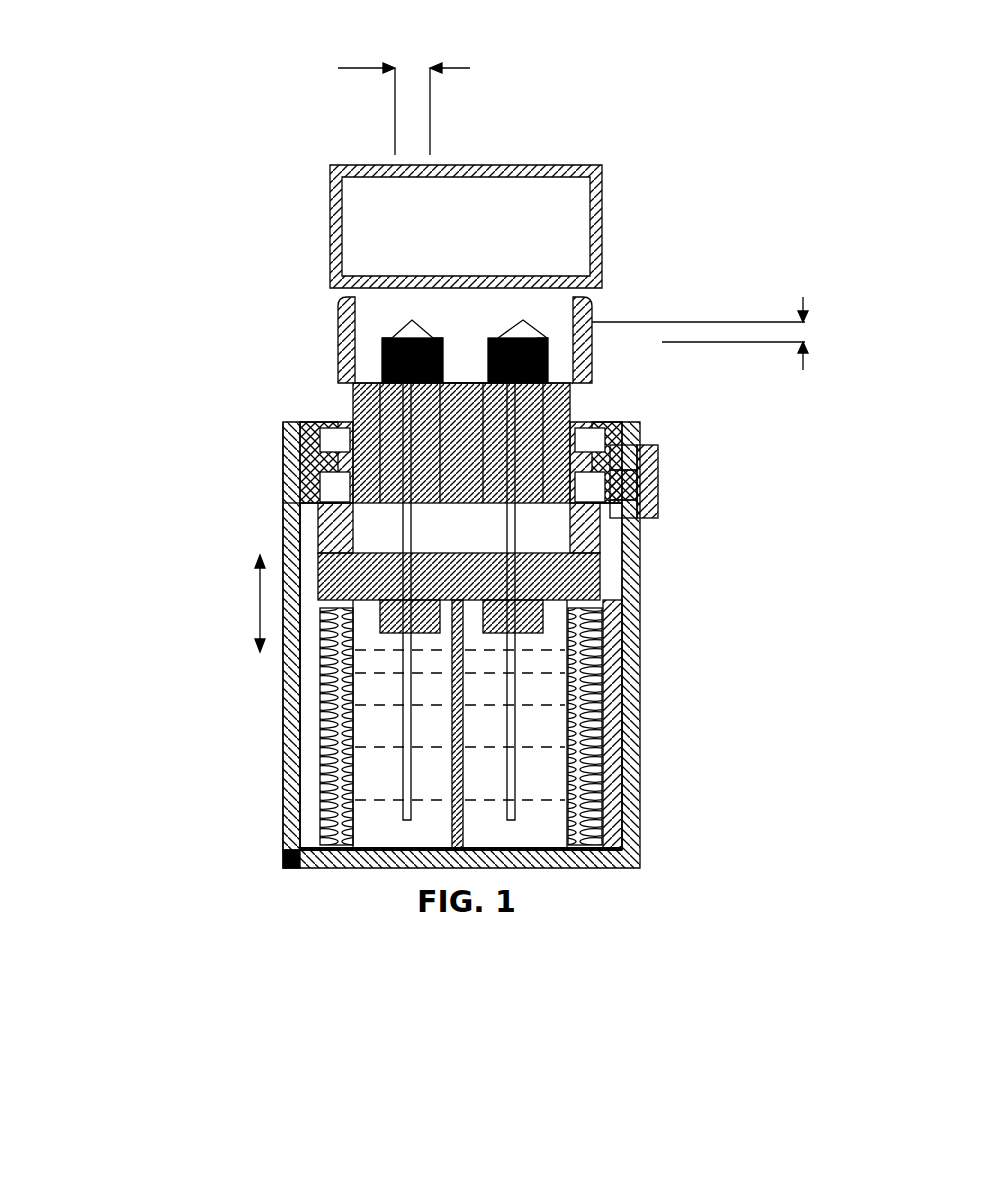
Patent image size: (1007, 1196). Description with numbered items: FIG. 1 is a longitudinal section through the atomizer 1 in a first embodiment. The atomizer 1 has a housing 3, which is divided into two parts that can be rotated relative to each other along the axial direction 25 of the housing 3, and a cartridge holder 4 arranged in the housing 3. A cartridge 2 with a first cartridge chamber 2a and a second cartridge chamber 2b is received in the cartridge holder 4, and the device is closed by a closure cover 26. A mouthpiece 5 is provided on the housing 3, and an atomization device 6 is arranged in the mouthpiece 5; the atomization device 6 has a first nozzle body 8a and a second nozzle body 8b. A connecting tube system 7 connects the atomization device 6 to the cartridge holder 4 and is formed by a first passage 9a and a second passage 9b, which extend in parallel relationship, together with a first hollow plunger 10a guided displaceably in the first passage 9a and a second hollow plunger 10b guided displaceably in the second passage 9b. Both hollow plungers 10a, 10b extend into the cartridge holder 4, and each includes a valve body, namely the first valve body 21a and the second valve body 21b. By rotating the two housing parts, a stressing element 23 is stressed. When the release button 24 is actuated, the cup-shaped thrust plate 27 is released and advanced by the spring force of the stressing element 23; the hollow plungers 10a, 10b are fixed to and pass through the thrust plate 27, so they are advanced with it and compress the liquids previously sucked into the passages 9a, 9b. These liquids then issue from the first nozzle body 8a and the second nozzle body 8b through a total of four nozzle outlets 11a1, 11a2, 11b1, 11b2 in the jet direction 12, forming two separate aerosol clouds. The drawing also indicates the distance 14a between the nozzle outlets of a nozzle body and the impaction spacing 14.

The atomizer 1 is at (256, 512).
The cartridge 2 is at (350, 868).
The first cartridge chamber 2a is at (373, 835).
The second cartridge chamber 2b is at (553, 835).
The housing 3 is at (275, 835).
The cartridge holder 4 is at (605, 692).
The mouthpiece 5 is at (592, 325).
The atomization device 6 is at (482, 312).
The connecting tube system 7 is at (337, 420).
The first nozzle body 8a is at (337, 357).
The second nozzle body 8b is at (592, 313).
The first passage 9a is at (340, 410).
The second passage 9b is at (592, 340).
The first hollow plunger 10a is at (400, 692).
The second hollow plunger 10b is at (520, 725).
The first nozzle outlet of first nozzle body 11a1 is at (390, 340).
The second nozzle outlet of first nozzle body 11a2 is at (448, 332).
The first nozzle outlet of second nozzle body 11b1 is at (500, 338).
The second nozzle outlet of second nozzle body 11b2 is at (672, 322).
The jet direction 12 is at (414, 322).
The impaction spacing 14 is at (803, 297).
The distance between nozzle outlets of a nozzle body 14a is at (352, 68).
The first valve body 21a is at (282, 455).
The second valve body 21b is at (592, 390).
The stressing element 23 is at (640, 820).
The release button 24 is at (658, 487).
The axial direction of the housing 25 is at (256, 597).
The closure cover 26 is at (466, 226).
The thrust plate 27 is at (283, 540).